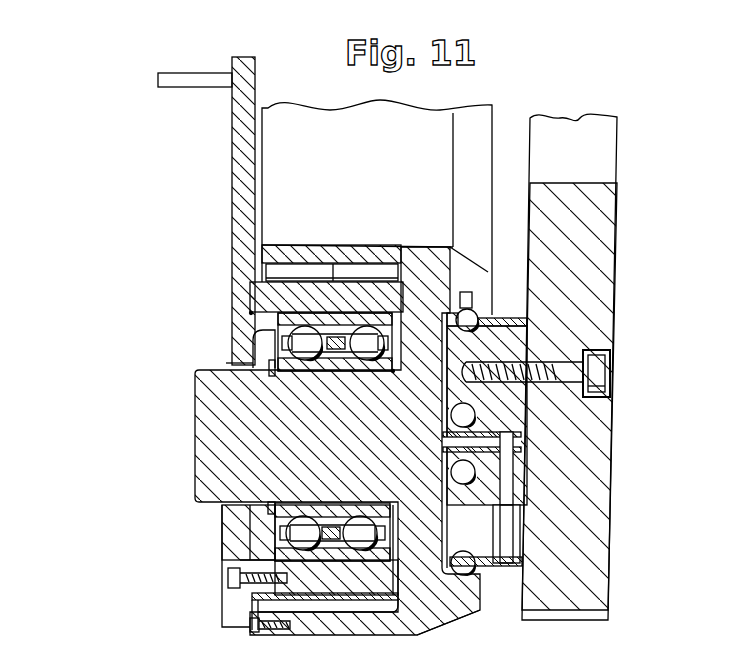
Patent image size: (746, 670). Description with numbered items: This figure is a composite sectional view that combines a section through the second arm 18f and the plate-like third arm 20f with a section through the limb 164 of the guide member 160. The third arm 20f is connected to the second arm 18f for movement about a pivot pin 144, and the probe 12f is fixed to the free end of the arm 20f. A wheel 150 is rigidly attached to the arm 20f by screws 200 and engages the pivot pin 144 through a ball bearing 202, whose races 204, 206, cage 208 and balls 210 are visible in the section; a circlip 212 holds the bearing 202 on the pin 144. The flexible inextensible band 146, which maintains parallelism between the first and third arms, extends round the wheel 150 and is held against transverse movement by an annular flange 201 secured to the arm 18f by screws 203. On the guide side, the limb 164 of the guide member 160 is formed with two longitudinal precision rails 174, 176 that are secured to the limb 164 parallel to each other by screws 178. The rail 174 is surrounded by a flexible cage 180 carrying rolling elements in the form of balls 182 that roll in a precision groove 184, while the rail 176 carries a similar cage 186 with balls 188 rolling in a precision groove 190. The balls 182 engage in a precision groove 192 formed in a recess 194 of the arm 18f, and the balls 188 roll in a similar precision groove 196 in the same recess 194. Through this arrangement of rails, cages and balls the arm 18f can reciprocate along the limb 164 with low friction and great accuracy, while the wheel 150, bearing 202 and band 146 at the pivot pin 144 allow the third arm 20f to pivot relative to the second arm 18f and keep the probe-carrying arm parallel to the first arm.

The probe 12f is at (183, 80).
The second arm 18f is at (310, 102).
The third arm 20f is at (242, 134).
The pivot pin 144 is at (213, 411).
The flexible inextensible band 146 is at (300, 278).
The wheel 150 is at (260, 298).
The guide member 160 is at (613, 463).
The limb 164 is at (580, 585).
The precision rail 174 is at (474, 298).
The precision rail 176 is at (500, 525).
The screws 178 is at (598, 368).
The flexible cage 180 is at (530, 345).
The balls 182 is at (470, 315).
The precision groove 184 is at (480, 326).
The cage 186 is at (505, 546).
The balls 188 is at (458, 578).
The precision groove 190 is at (480, 566).
The precision groove 192 is at (462, 302).
The recess 194 is at (440, 318).
The precision groove 196 is at (474, 616).
The screws 200 is at (232, 578).
The annular flange 201 is at (252, 601).
The ball bearing 202 is at (262, 520).
The screws 203 is at (268, 632).
The race 204 is at (255, 548).
The race 206 is at (262, 531).
The cage 208 is at (347, 337).
The balls 210 is at (258, 340).
The circlip 212 is at (268, 507).